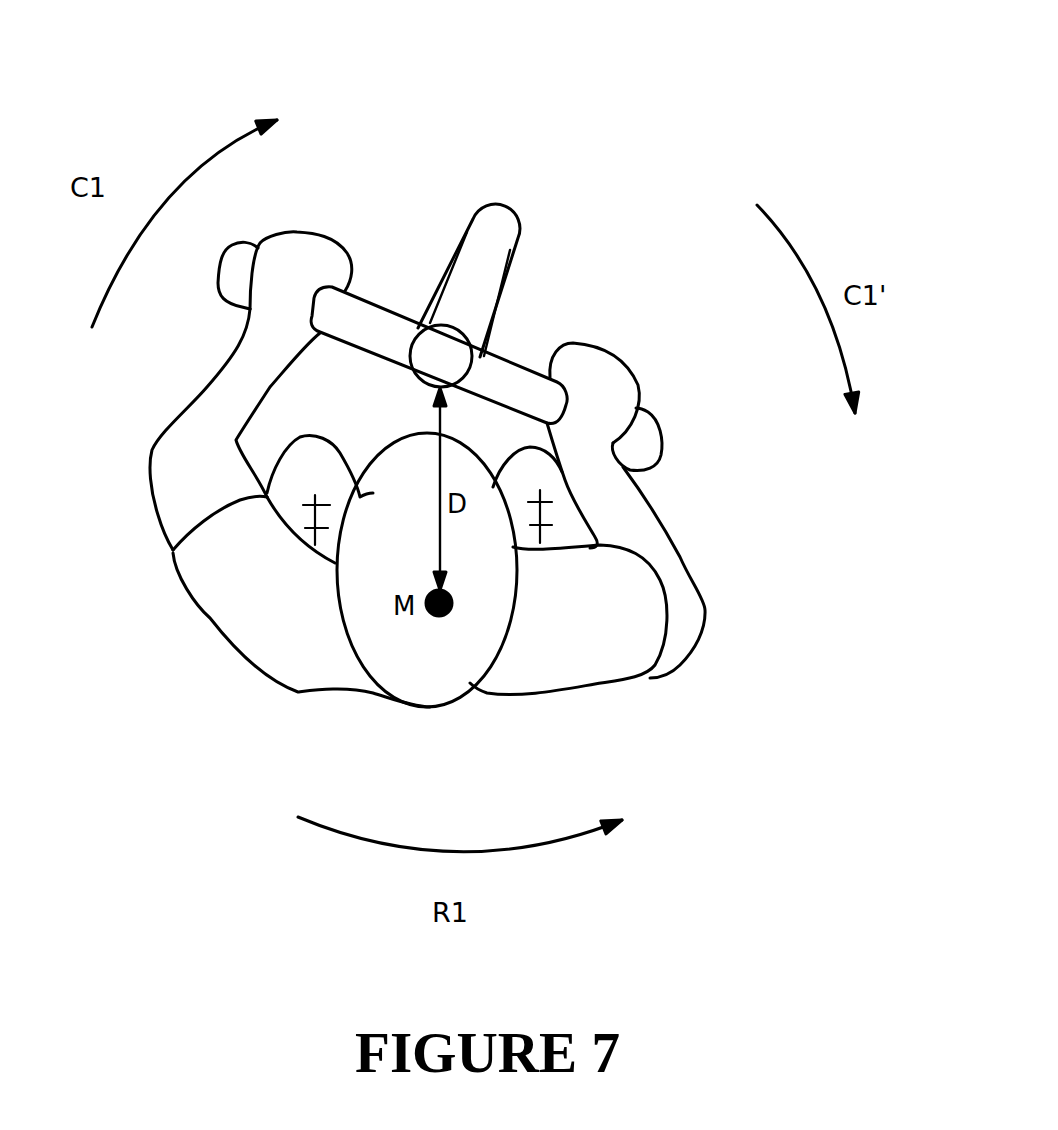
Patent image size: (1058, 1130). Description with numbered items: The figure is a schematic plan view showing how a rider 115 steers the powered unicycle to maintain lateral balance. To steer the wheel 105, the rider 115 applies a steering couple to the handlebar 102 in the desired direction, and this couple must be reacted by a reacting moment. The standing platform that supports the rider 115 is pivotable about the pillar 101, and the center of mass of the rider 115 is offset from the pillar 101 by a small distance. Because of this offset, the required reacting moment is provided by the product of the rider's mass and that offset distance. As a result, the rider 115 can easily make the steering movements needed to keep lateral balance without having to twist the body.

The pillar 101 is at (437, 345).
The handlebar 102 is at (506, 375).
The wheel 105 is at (498, 236).
The rider 115 is at (617, 618).